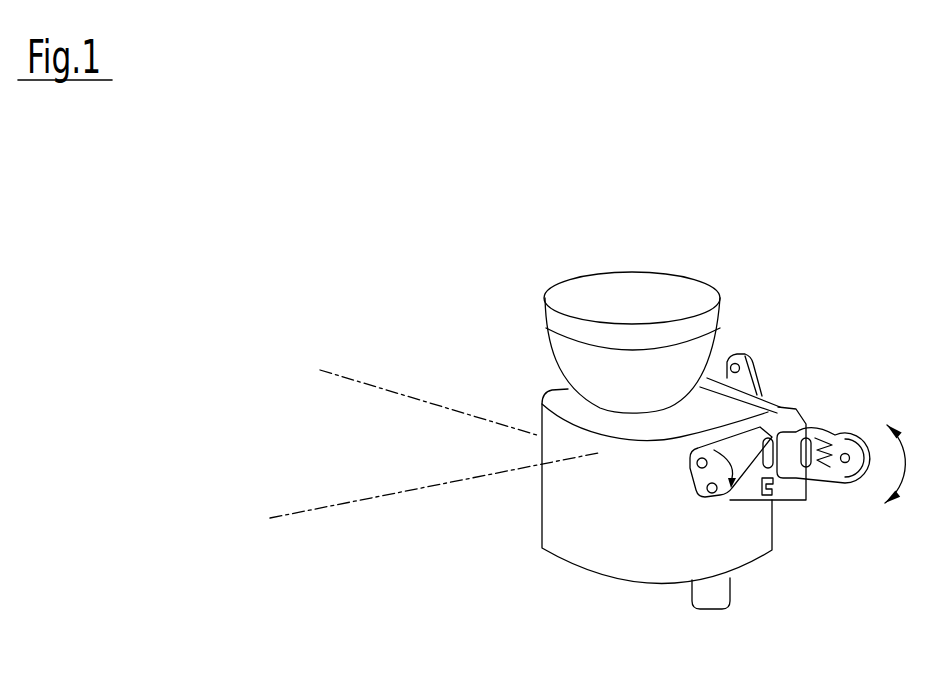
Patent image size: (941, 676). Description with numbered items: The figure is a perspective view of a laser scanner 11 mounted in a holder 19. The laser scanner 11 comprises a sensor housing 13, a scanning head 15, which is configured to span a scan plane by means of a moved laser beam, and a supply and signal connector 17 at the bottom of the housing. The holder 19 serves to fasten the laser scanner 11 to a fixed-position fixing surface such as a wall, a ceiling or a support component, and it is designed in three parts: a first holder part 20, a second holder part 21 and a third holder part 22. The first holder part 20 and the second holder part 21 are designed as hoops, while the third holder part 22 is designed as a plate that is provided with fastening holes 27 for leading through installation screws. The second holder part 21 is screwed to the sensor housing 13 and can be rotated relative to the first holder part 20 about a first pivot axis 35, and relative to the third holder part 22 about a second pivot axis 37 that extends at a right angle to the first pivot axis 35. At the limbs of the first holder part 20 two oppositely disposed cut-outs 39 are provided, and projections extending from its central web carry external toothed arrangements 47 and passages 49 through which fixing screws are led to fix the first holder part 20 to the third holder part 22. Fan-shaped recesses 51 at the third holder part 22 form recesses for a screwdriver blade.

The laser scanner 11 is at (472, 304).
The sensor housing 13 is at (568, 495).
The scanning head 15 is at (642, 290).
The supply and signal connector 17 is at (722, 588).
The holder 19 is at (804, 363).
The first holder part 20 is at (781, 423).
The second holder part 21 is at (693, 477).
The third holder part 22 is at (852, 403).
The fastening holes 27 is at (848, 456).
The first pivot axis 35 is at (365, 385).
The second pivot axis 37 is at (325, 507).
The cut-outs 39 is at (769, 494).
The external toothed arrangements 47 is at (813, 438).
The passages 49 is at (808, 480).
The fan-shaped recesses 51 is at (835, 467).